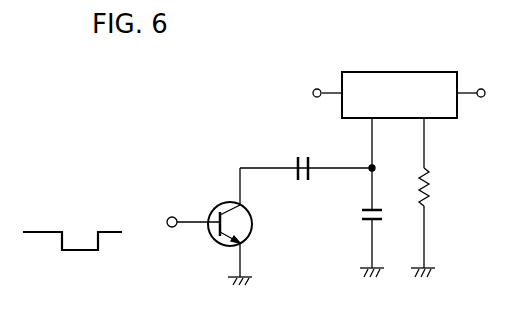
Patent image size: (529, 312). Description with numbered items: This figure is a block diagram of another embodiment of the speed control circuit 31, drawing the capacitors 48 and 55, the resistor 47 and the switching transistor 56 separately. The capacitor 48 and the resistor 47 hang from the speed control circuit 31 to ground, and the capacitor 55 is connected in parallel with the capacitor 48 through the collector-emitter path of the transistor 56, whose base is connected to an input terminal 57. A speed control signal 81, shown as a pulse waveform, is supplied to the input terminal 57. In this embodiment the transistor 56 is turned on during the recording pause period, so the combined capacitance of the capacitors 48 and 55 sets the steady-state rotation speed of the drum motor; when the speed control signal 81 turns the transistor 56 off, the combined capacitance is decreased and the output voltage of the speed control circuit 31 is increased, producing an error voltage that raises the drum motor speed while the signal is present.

The speed control circuit 31 is at (457, 80).
The resistor 47 is at (430, 178).
The capacitor 48 is at (360, 215).
The capacitor 55 is at (300, 156).
The switching transistor 56 is at (211, 237).
The input terminal 57 is at (173, 217).
The speed control signal 81 is at (82, 251).